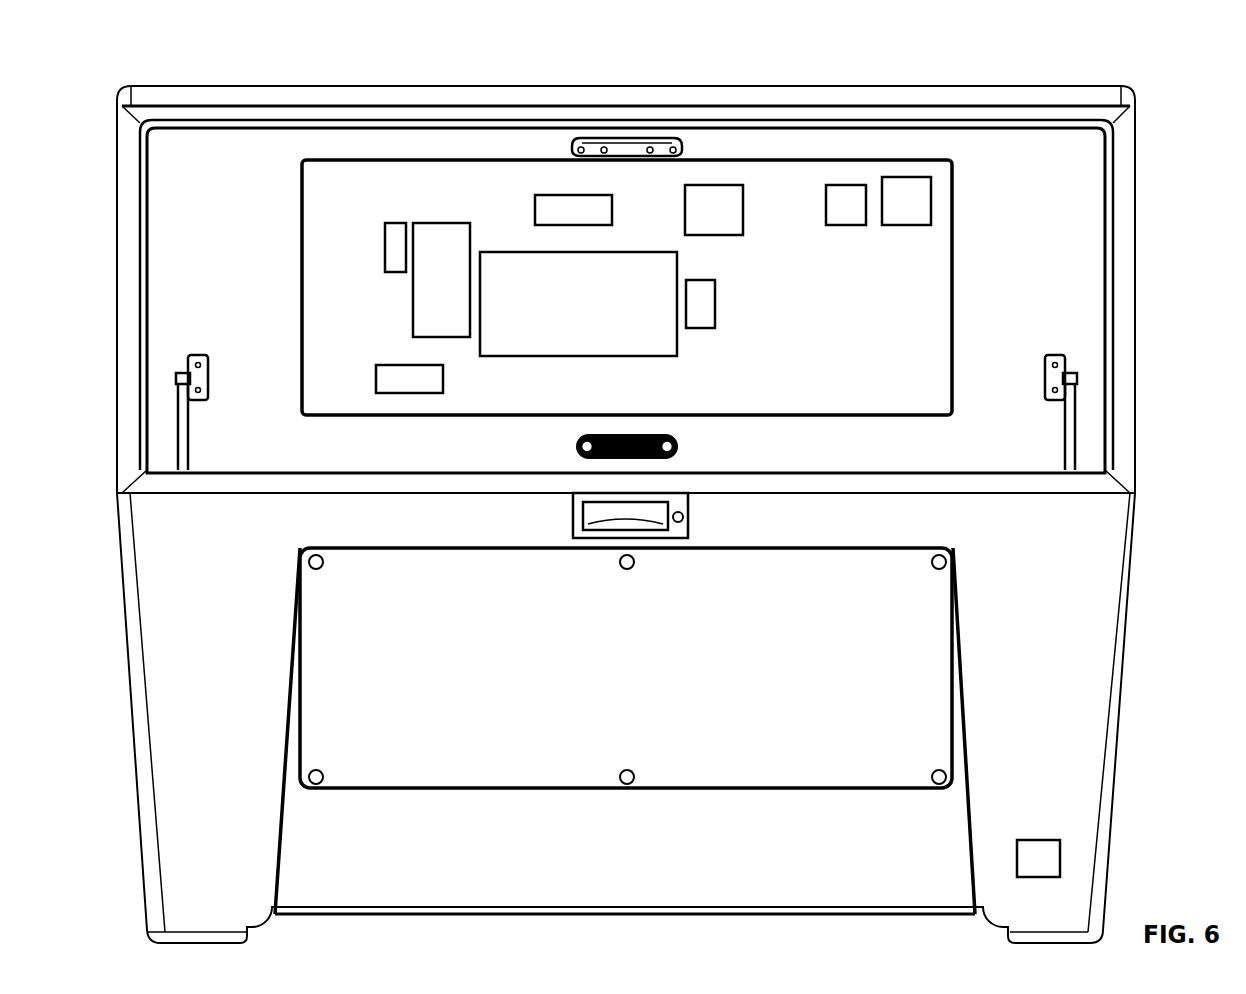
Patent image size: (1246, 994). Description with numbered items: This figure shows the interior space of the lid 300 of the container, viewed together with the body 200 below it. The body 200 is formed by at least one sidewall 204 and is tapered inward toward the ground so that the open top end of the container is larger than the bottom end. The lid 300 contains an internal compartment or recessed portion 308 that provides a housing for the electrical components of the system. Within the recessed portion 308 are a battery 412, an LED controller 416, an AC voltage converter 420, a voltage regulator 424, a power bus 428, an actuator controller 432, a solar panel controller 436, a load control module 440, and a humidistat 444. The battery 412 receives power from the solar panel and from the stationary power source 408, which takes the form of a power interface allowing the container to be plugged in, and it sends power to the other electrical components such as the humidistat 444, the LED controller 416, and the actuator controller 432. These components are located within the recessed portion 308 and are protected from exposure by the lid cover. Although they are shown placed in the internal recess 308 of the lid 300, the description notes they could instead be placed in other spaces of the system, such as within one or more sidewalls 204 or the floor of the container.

The body 200 is at (1090, 782).
The sidewall 204 is at (1060, 614).
The lid 300 is at (858, 100).
The recessed portion 308 is at (869, 344).
The stationary power source 408 is at (1037, 855).
The battery 412 is at (598, 318).
The LED controller 416 is at (393, 238).
The AC voltage converter 420 is at (427, 322).
The voltage regulator 424 is at (400, 384).
The power bus 428 is at (542, 213).
The actuator controller 432 is at (730, 200).
The solar panel controller 436 is at (705, 312).
The load control module 440 is at (843, 213).
The humidistat 444 is at (910, 213).